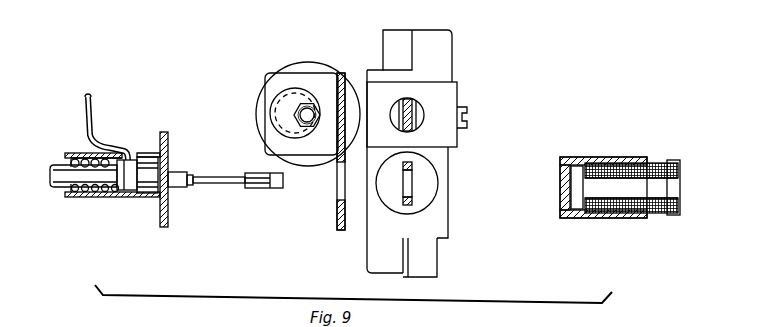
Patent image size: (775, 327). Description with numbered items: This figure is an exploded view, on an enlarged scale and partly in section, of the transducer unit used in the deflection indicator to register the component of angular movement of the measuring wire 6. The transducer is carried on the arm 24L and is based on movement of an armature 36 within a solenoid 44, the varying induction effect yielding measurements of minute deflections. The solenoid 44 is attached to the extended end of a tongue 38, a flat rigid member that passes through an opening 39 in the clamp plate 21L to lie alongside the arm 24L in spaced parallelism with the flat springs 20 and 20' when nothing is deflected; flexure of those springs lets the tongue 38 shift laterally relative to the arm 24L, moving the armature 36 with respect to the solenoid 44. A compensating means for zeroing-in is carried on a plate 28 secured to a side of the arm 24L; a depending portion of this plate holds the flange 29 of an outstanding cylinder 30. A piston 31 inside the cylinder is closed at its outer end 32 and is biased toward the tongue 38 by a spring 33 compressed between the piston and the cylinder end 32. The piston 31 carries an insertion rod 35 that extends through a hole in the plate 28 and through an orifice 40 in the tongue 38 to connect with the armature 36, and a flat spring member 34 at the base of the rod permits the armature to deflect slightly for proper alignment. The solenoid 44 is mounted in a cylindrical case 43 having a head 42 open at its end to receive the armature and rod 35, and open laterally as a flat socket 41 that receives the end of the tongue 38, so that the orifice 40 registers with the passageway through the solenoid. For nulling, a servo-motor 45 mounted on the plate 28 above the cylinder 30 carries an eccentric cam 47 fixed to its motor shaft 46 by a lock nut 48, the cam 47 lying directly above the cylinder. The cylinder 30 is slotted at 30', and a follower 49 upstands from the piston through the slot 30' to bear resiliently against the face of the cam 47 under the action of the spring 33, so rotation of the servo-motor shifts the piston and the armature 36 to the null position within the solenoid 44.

The measuring wire 6 is at (402, 100).
The flat spring 20 is at (397, 38).
The flat spring 20' is at (426, 268).
The clamp plate 21L is at (442, 40).
The arm 24L is at (437, 90).
The plate 28 is at (337, 215).
The flange 29 is at (168, 222).
The cylinder 30 is at (111, 189).
The slot 30' is at (156, 132).
The piston 31 is at (122, 192).
The cylinder end 32 is at (63, 186).
The spring 33 is at (90, 156).
The flat spring member 34 is at (152, 195).
The insertion rod 35 is at (218, 184).
The armature 36 is at (267, 189).
The tongue 38 is at (413, 165).
The opening 39 is at (423, 207).
The orifice 40 is at (410, 182).
The flat socket 41 is at (572, 188).
The head 42 is at (568, 157).
The cylindrical case 43 is at (613, 158).
The solenoid 44 is at (670, 163).
The servo-motor 45 is at (298, 65).
The motor shaft 46 is at (312, 103).
The eccentric cam 47 is at (275, 98).
The lock nut 48 is at (305, 100).
The follower 49 is at (85, 100).